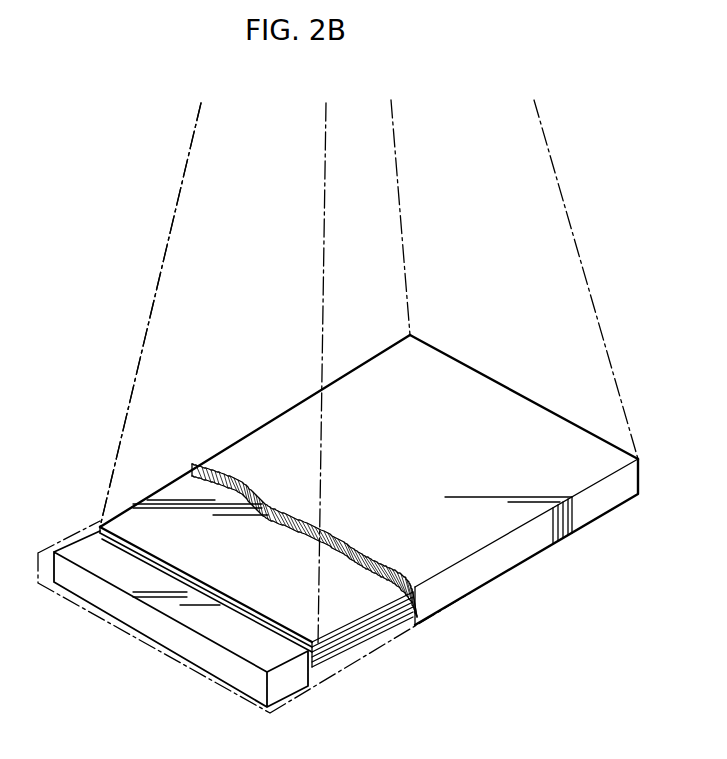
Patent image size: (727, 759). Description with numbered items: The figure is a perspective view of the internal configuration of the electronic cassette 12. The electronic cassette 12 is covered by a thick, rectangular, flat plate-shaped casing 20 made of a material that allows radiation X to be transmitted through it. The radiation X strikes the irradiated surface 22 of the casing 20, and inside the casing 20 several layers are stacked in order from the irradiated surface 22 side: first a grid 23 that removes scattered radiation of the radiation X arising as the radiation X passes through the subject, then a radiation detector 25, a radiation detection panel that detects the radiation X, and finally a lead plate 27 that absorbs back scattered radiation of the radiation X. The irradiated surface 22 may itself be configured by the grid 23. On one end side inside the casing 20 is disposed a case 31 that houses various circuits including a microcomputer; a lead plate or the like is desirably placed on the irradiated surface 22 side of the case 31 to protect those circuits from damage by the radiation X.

The radiation X is at (158, 280).
The electronic cassette 12 is at (268, 405).
The irradiated surface 22 is at (503, 404).
The casing 20 is at (508, 559).
The grid 23 is at (370, 579).
The radiation detector 25 is at (388, 613).
The lead plate 27 is at (358, 647).
The case 31 is at (287, 675).